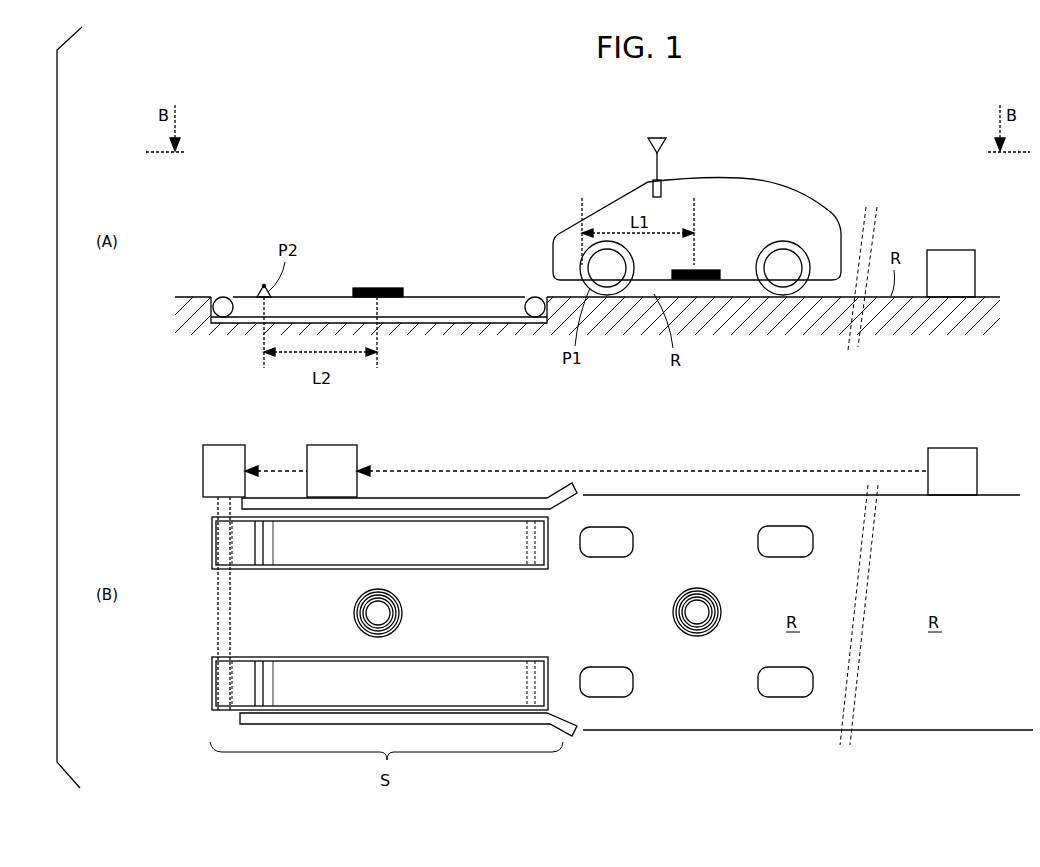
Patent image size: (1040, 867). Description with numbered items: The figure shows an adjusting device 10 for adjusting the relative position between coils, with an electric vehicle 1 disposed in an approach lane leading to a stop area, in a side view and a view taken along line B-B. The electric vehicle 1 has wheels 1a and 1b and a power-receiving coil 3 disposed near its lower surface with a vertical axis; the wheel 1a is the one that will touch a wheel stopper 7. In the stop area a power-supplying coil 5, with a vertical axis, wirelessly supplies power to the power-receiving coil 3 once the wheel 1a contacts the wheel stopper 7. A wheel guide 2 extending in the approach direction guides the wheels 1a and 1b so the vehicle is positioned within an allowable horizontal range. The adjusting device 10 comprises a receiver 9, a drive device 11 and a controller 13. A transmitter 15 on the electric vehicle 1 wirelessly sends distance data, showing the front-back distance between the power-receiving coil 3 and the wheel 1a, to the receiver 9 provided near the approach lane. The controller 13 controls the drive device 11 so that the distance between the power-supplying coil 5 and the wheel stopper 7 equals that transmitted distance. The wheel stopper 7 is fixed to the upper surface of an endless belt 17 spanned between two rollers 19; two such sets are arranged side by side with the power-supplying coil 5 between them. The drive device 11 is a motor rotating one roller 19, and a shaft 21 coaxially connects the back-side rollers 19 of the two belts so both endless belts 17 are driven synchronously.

The electric vehicle 1 is at (755, 178).
The wheel 1a is at (618, 242).
The wheel 1b is at (806, 241).
The wheel guide 2 is at (455, 497).
The power-receiving coil 3 is at (708, 268).
The power-supplying coil 5 is at (397, 300).
The wheel stopper 7 is at (254, 292).
The receiver 9 is at (958, 284).
The adjusting device 10 is at (270, 148).
The drive device 11 is at (225, 452).
The controller 13 is at (343, 483).
The transmitter 15 is at (661, 138).
The endless belt 17 is at (430, 313).
The roller 19 is at (217, 298).
The shaft 21 is at (216, 608).